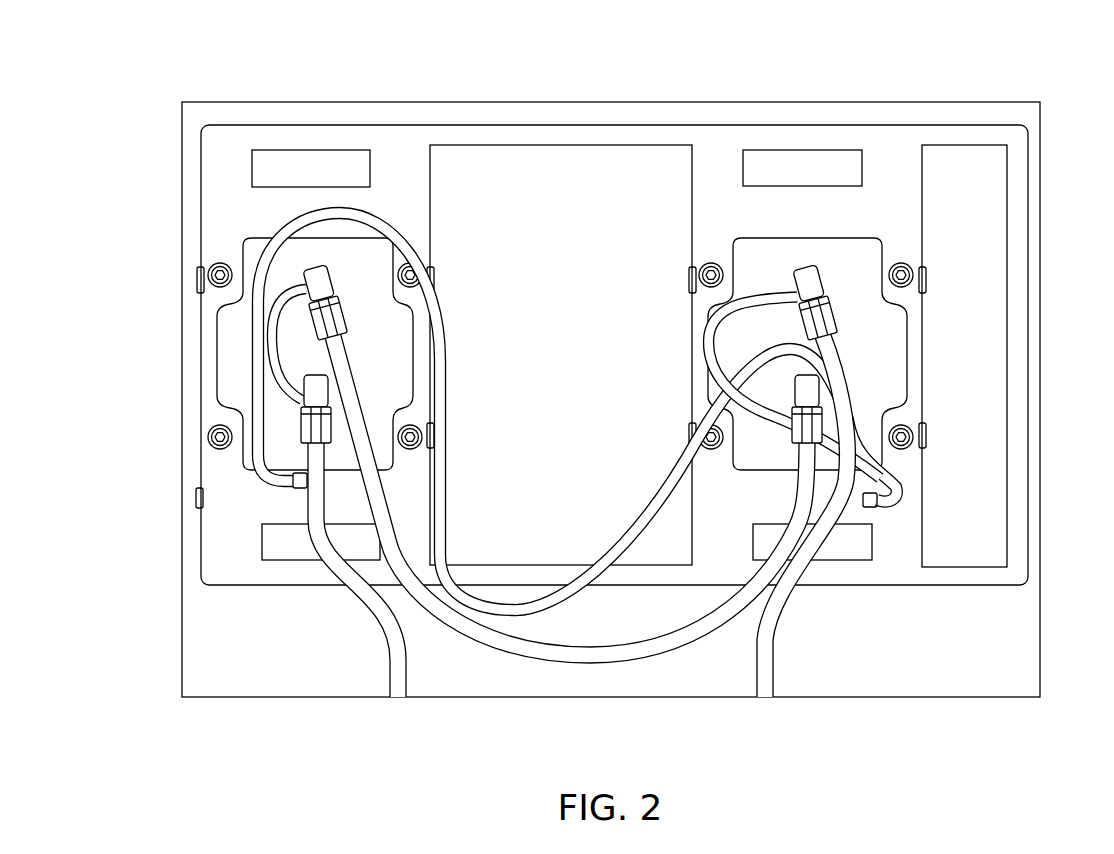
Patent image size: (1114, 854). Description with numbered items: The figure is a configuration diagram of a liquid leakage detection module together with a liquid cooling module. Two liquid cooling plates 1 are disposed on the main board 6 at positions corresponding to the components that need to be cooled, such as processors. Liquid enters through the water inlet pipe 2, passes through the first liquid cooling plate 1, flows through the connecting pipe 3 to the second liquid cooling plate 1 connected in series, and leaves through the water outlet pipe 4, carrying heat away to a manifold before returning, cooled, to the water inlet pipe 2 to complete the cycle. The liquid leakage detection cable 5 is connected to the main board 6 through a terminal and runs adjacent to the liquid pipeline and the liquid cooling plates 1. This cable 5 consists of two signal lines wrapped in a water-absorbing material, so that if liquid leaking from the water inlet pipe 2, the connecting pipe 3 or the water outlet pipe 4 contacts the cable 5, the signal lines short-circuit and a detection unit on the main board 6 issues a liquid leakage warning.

The liquid cooling plate 1 is at (371, 272).
The water inlet pipe 2 is at (392, 662).
The connecting pipe 3 is at (657, 645).
The water outlet pipe 4 is at (838, 388).
The liquid leakage detection cable 5 is at (283, 226).
The main board 6 is at (889, 145).